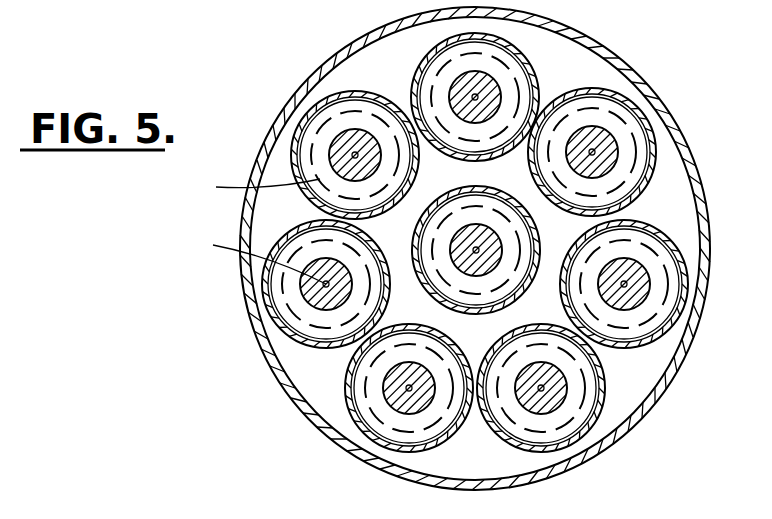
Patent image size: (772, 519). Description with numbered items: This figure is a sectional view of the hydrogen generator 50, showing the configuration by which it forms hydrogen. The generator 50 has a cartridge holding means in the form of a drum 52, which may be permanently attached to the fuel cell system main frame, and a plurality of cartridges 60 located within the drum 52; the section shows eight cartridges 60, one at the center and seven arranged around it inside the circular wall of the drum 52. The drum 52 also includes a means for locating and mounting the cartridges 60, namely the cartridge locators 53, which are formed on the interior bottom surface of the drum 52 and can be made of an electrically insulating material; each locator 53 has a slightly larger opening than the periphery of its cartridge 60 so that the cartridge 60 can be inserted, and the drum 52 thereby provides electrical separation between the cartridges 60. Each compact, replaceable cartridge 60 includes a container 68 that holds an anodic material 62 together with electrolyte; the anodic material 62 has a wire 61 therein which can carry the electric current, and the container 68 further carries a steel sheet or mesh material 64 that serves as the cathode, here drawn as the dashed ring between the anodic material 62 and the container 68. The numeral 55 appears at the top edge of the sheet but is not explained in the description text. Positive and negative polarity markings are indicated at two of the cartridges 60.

The generator 50 is at (240, 299).
The drum 52 is at (275, 122).
The cartridge locators 53 is at (540, 75).
The housing 55 is at (311, 6).
The cartridge 60 is at (612, 375).
The wire 61 is at (596, 148).
The anodic material 62 is at (617, 155).
The steel sheet or mesh material 64 is at (630, 173).
The container 68 is at (640, 200).